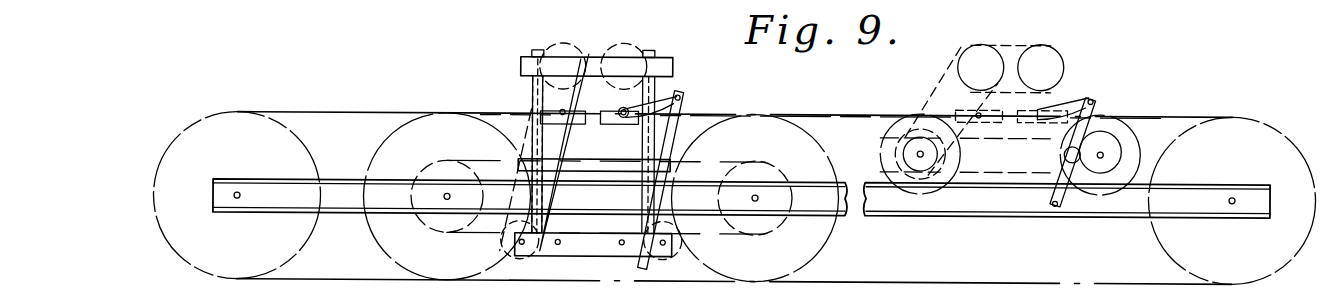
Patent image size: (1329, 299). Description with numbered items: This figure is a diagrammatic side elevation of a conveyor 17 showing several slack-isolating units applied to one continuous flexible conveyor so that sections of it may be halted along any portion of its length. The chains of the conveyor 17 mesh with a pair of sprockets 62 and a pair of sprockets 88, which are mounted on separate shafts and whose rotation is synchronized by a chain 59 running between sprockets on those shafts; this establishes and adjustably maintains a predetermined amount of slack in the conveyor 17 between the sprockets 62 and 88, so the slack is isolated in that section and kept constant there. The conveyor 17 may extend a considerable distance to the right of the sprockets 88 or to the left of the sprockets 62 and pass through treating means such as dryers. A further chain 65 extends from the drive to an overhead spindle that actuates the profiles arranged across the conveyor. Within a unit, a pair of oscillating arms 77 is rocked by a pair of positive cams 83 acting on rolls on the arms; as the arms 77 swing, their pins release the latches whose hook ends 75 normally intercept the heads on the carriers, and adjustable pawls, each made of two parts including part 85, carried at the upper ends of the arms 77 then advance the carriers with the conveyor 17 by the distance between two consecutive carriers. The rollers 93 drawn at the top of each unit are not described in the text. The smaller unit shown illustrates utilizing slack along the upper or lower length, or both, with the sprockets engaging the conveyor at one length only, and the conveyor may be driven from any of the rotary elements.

The conveyor 17 is at (315, 108).
The sprockets 62 is at (372, 162).
The rollers 93 is at (588, 45).
The pawl part 85 is at (633, 113).
The oscillating arms 77 is at (660, 127).
The chain 65 is at (572, 142).
The chain 59 is at (716, 160).
The sprockets 88 is at (837, 231).
The positive cams 83 is at (662, 262).
The hook ends 75 is at (1077, 98).